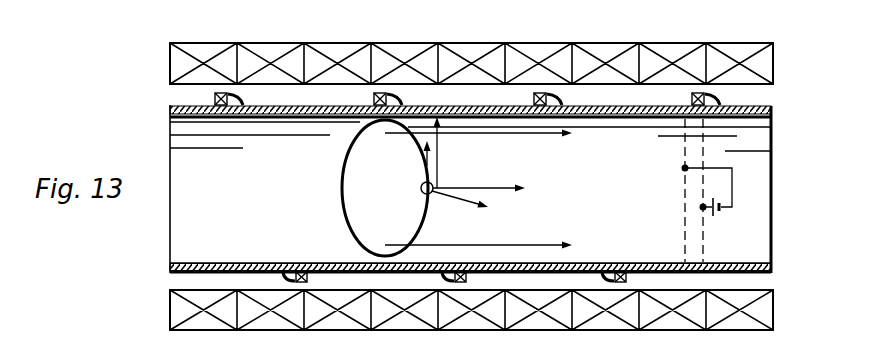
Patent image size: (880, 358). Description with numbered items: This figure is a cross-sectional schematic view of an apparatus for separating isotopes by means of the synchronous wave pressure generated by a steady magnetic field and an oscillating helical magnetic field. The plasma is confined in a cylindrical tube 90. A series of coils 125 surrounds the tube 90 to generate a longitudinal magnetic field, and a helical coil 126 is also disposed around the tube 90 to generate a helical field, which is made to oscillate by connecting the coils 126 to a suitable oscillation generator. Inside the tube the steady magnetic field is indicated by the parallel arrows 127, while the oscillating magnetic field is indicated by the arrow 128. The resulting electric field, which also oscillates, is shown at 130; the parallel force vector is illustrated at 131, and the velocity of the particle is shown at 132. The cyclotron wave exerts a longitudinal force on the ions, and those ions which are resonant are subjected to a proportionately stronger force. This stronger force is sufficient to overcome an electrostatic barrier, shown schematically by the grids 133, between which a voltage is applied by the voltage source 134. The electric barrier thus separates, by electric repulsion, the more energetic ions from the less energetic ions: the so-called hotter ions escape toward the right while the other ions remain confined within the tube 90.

The cylindrical tube 90 is at (170, 247).
The series of coils 125 is at (523, 44).
The helical coil 126 is at (215, 98).
The parallel arrows 127 is at (552, 136).
The arrow 128 is at (448, 199).
The electric field 130 is at (439, 140).
The parallel force vector 131 is at (498, 181).
The velocity of the particle 132 is at (429, 162).
The grids 133 is at (702, 244).
The voltage source 134 is at (720, 215).